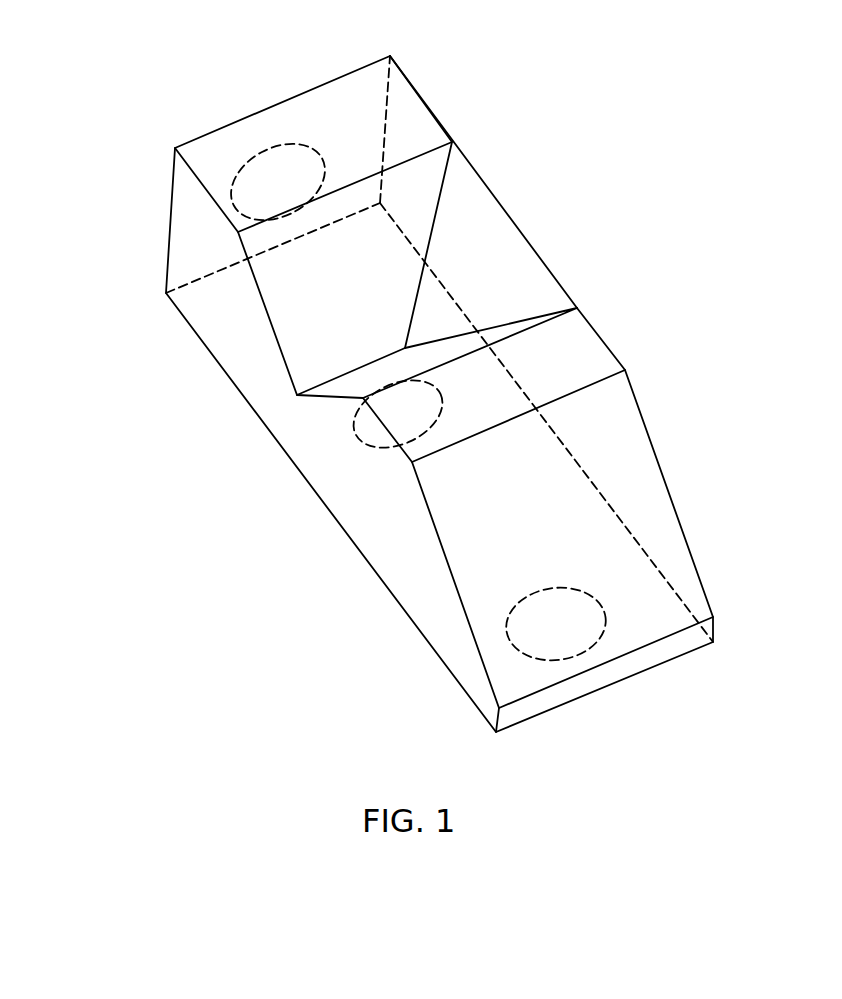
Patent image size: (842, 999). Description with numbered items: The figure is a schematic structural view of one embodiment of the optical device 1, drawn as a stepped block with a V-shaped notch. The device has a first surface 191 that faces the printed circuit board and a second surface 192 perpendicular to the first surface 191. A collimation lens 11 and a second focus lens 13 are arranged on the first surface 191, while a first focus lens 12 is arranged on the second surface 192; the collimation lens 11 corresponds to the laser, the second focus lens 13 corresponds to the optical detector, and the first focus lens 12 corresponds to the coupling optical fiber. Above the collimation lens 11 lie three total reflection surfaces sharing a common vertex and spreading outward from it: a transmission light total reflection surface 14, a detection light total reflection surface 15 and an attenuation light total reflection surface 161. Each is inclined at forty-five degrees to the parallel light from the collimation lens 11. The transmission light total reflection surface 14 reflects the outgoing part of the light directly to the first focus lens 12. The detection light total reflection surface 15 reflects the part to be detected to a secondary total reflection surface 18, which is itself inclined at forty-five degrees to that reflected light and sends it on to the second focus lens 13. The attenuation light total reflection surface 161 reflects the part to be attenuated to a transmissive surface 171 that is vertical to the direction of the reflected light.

The optical device 1 is at (110, 247).
The collimation lens 11 is at (383, 447).
The first focus lens 12 is at (277, 162).
The second focus lens 13 is at (573, 647).
The transmission light total reflection surface 14 is at (417, 193).
The detection light total reflection surface 15 is at (503, 327).
The attenuation light total reflection surface 161 is at (493, 268).
The transmissive surface 171 is at (575, 368).
The secondary total reflection surface 18 is at (632, 503).
The first surface 191 is at (385, 532).
The second surface 192 is at (353, 118).